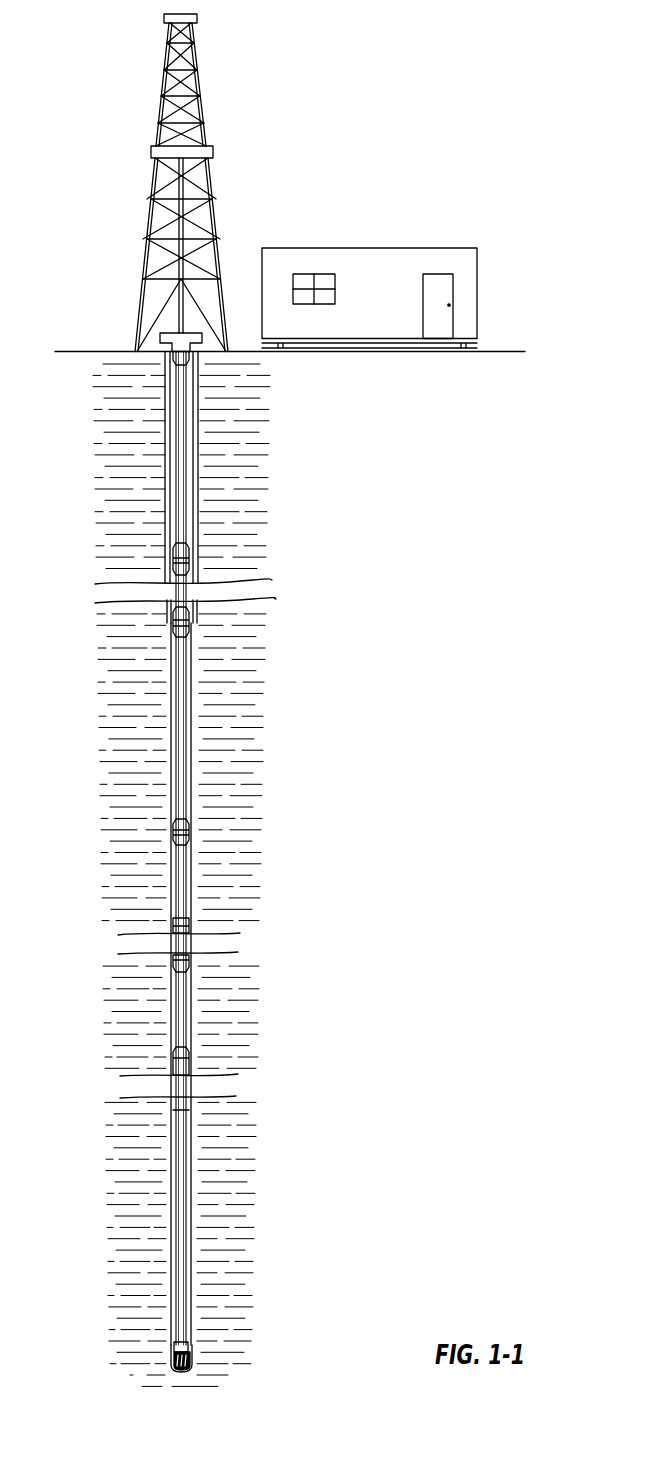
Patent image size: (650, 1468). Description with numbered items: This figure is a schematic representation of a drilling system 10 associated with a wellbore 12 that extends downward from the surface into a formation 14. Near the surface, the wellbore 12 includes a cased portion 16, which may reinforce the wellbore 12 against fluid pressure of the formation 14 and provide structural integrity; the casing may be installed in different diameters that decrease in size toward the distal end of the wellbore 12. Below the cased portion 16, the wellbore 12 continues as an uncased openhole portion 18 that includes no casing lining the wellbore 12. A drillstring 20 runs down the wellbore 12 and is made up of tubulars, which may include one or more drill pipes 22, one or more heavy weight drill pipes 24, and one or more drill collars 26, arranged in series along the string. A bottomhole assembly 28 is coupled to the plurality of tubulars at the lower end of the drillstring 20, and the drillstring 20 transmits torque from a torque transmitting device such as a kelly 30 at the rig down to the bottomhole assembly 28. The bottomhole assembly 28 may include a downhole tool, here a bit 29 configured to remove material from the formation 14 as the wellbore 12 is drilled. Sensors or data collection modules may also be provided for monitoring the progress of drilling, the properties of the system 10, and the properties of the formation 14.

The drilling system 10 is at (267, 197).
The wellbore 12 is at (176, 668).
The formation 14 is at (248, 676).
The cased portion 16 is at (194, 450).
The openhole portion 18 is at (191, 782).
The drillstring 20 is at (186, 543).
The drill pipes 22 is at (183, 420).
The heavy weight drill pipes 24 is at (183, 1001).
The drill collars 26 is at (180, 1121).
The bottomhole assembly 28 is at (191, 1345).
The bit 29 is at (172, 1357).
The kelly 30 is at (172, 340).